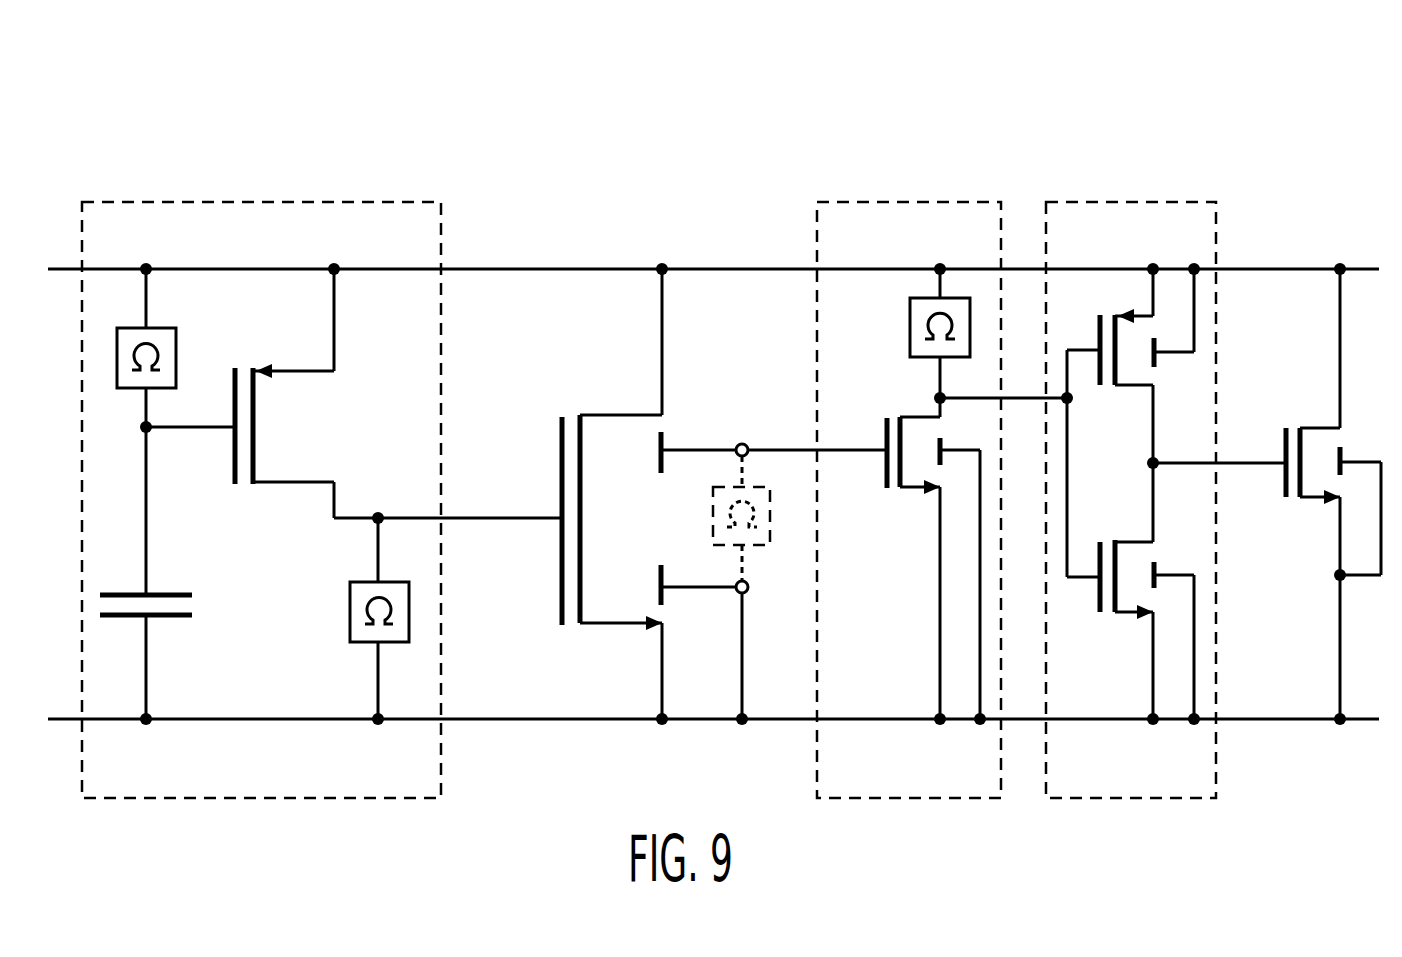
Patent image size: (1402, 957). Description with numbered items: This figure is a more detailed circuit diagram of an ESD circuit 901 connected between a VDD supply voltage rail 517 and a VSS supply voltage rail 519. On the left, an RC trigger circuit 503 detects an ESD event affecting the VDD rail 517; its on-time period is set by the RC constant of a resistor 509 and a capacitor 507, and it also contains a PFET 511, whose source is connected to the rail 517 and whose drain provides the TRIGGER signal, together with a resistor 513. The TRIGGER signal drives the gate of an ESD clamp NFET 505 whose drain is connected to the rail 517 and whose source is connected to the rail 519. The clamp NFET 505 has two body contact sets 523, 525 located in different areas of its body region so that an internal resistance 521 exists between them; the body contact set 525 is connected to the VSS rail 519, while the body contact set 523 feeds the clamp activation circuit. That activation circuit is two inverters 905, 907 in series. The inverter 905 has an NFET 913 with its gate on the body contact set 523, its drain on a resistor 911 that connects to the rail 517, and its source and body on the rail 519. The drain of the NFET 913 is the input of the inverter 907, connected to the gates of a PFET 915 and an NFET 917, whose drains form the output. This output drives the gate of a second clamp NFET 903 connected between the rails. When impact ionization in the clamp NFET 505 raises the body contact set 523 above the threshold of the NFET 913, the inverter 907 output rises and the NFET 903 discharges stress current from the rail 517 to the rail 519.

The ESD circuit 901 is at (112, 118).
The trigger circuit 503 is at (342, 200).
The NFET 505 is at (560, 437).
The capacitor 507 is at (175, 620).
The resistor 509 is at (177, 365).
The PFET 511 is at (257, 430).
The resistor 513 is at (350, 612).
The VDD supply voltage rail 517 is at (594, 266).
The VSS supply voltage rail 519 is at (594, 716).
The internal resistance 521 is at (773, 535).
The body contact set 523 is at (665, 437).
The body contact set 525 is at (660, 578).
The NFET 903 is at (1283, 478).
The inverter 905 is at (912, 200).
The inverter 907 is at (1118, 200).
The resistor 911 is at (910, 330).
The NFET 913 is at (883, 477).
The PFET 915 is at (1098, 335).
The NFET 917 is at (1098, 595).